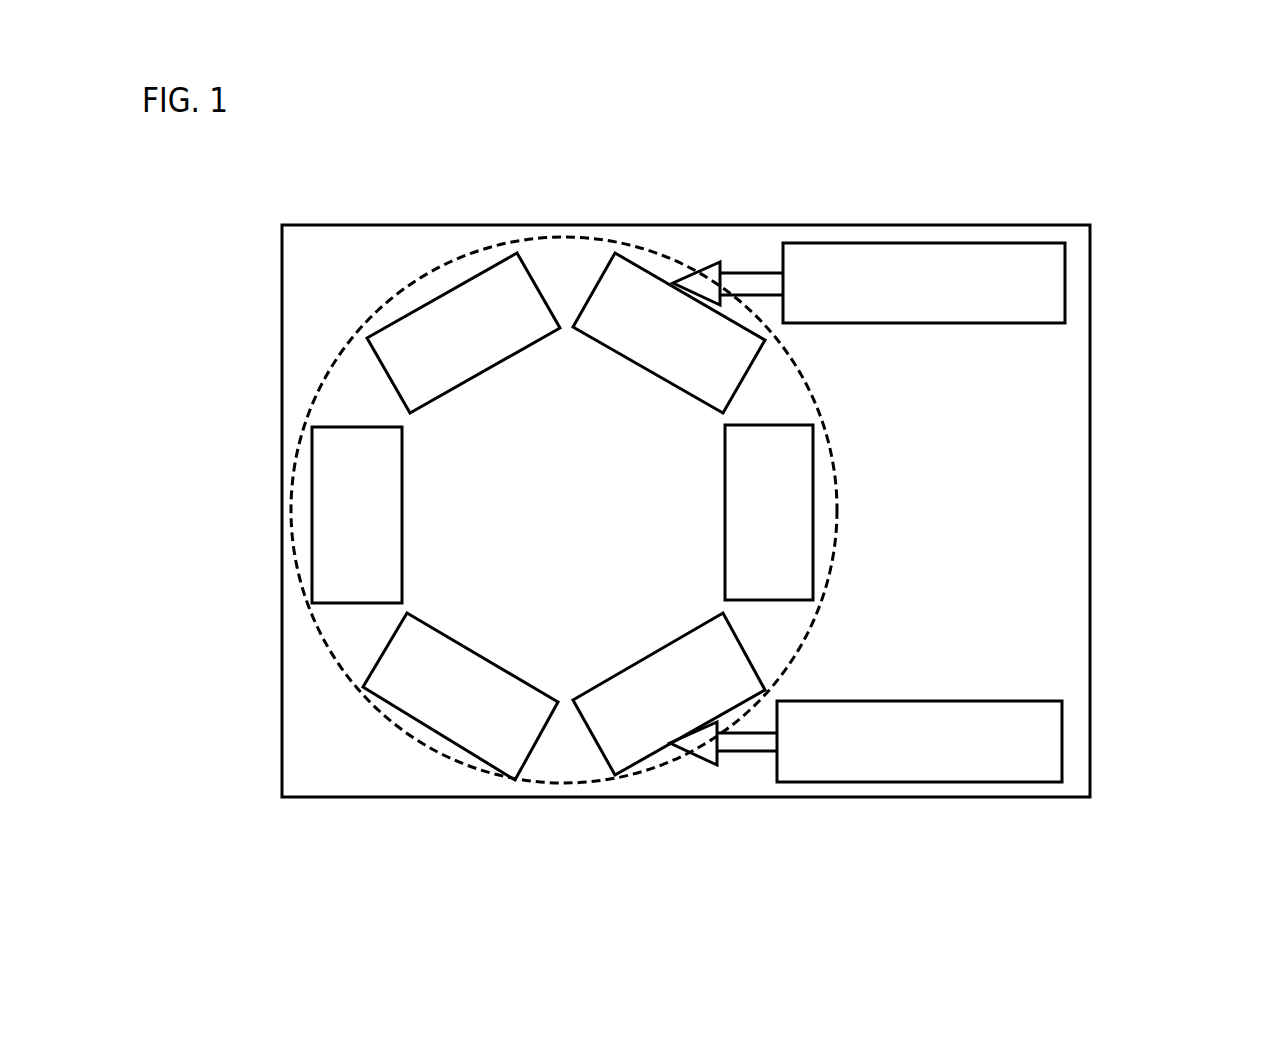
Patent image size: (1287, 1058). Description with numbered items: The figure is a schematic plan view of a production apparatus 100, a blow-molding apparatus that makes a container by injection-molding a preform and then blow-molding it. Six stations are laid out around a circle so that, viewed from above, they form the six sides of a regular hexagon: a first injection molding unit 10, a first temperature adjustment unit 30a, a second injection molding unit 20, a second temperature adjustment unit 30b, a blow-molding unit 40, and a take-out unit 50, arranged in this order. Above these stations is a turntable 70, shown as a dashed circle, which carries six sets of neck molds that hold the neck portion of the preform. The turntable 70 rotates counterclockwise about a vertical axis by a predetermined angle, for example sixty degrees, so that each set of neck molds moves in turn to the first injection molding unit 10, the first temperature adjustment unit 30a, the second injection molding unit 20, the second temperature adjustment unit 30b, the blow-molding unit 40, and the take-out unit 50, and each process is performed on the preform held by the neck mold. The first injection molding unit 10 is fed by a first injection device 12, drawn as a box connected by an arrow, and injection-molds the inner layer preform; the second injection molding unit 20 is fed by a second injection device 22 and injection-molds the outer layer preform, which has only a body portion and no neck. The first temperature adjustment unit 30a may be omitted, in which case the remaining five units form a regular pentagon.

The production apparatus (blow-molding apparatus) 100 is at (1137, 244).
The turntable 70 is at (564, 755).
The second temperature adjustment unit 30b is at (443, 345).
The second injection molding unit 20 is at (670, 325).
The first temperature adjustment unit 30a is at (788, 510).
The blow-molding unit 40 is at (335, 537).
The first injection molding unit 10 is at (655, 697).
The take-out unit 50 is at (467, 697).
The second injection device 22 is at (950, 272).
The first injection device 12 is at (938, 750).